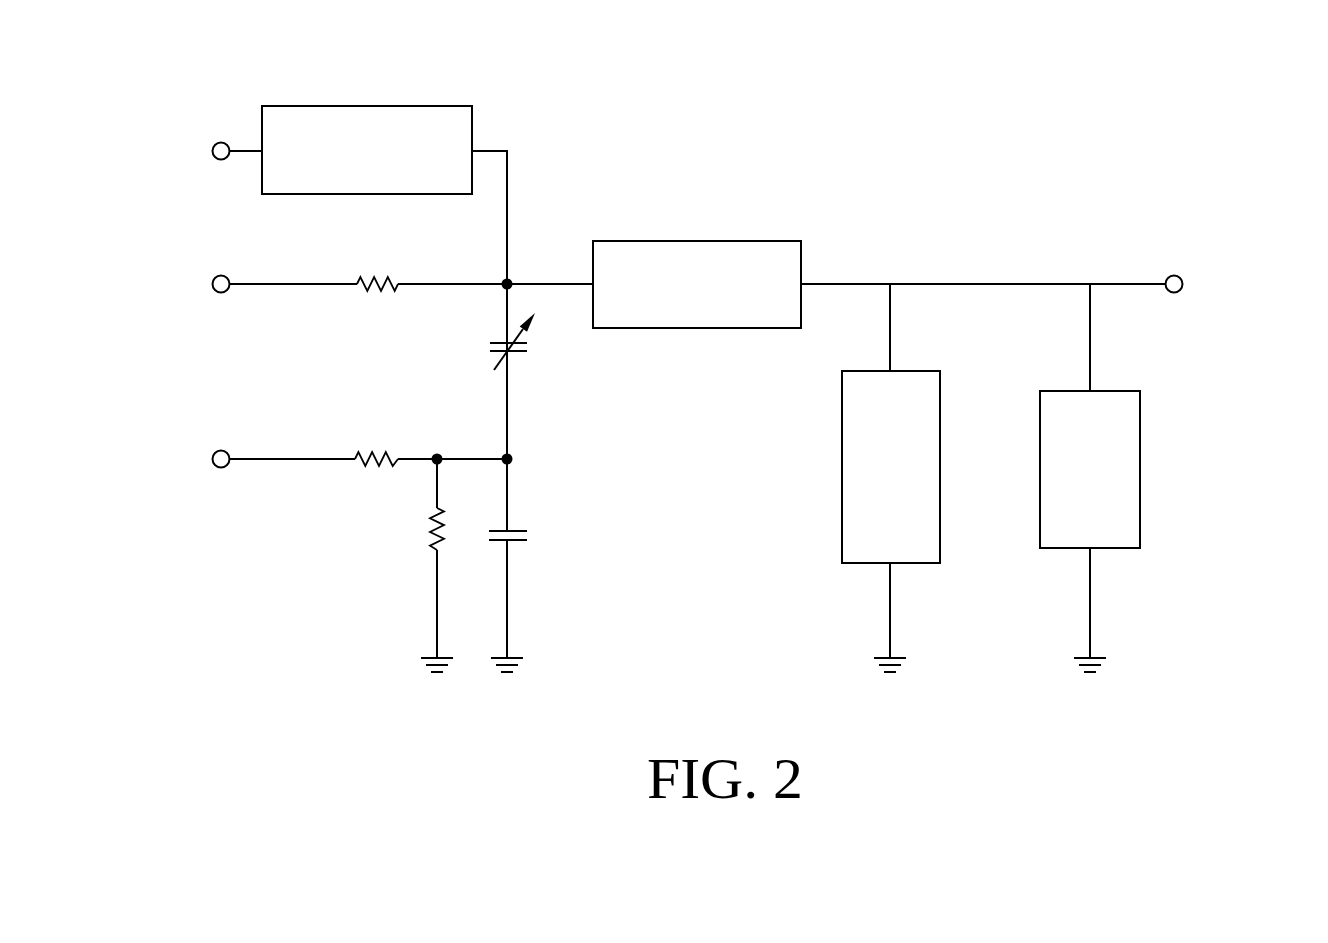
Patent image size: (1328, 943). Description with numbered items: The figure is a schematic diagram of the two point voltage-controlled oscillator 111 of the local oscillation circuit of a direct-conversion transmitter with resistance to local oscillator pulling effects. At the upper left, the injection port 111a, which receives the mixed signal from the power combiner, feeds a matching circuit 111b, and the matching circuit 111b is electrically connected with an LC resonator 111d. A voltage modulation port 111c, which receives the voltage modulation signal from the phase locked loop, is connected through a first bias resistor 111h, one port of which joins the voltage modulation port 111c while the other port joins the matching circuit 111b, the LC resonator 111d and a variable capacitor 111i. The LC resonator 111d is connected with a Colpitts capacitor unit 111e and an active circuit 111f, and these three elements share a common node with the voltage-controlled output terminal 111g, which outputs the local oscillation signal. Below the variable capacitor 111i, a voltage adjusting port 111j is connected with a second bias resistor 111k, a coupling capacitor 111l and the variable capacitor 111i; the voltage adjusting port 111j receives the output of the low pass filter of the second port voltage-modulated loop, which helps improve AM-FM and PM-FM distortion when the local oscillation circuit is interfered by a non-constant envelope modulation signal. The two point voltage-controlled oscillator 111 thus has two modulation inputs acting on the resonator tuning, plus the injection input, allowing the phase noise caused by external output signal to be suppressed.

The two point voltage-controlled oscillator 111 is at (714, 340).
The injection port 111a is at (221, 142).
The matching circuit 111b is at (367, 106).
The voltage modulation port 111c is at (221, 275).
The LC resonator 111d is at (697, 241).
The Colpitts capacitor unit 111e is at (842, 467).
The active circuit 111f is at (1140, 470).
The voltage-controlled output terminal 111g is at (1173, 275).
The first bias resistor 111h is at (378, 292).
The variable capacitor 111i is at (515, 355).
The voltage adjusting port 111j is at (221, 468).
The second bias resistor 111k is at (433, 547).
The coupling capacitor 111l is at (518, 543).